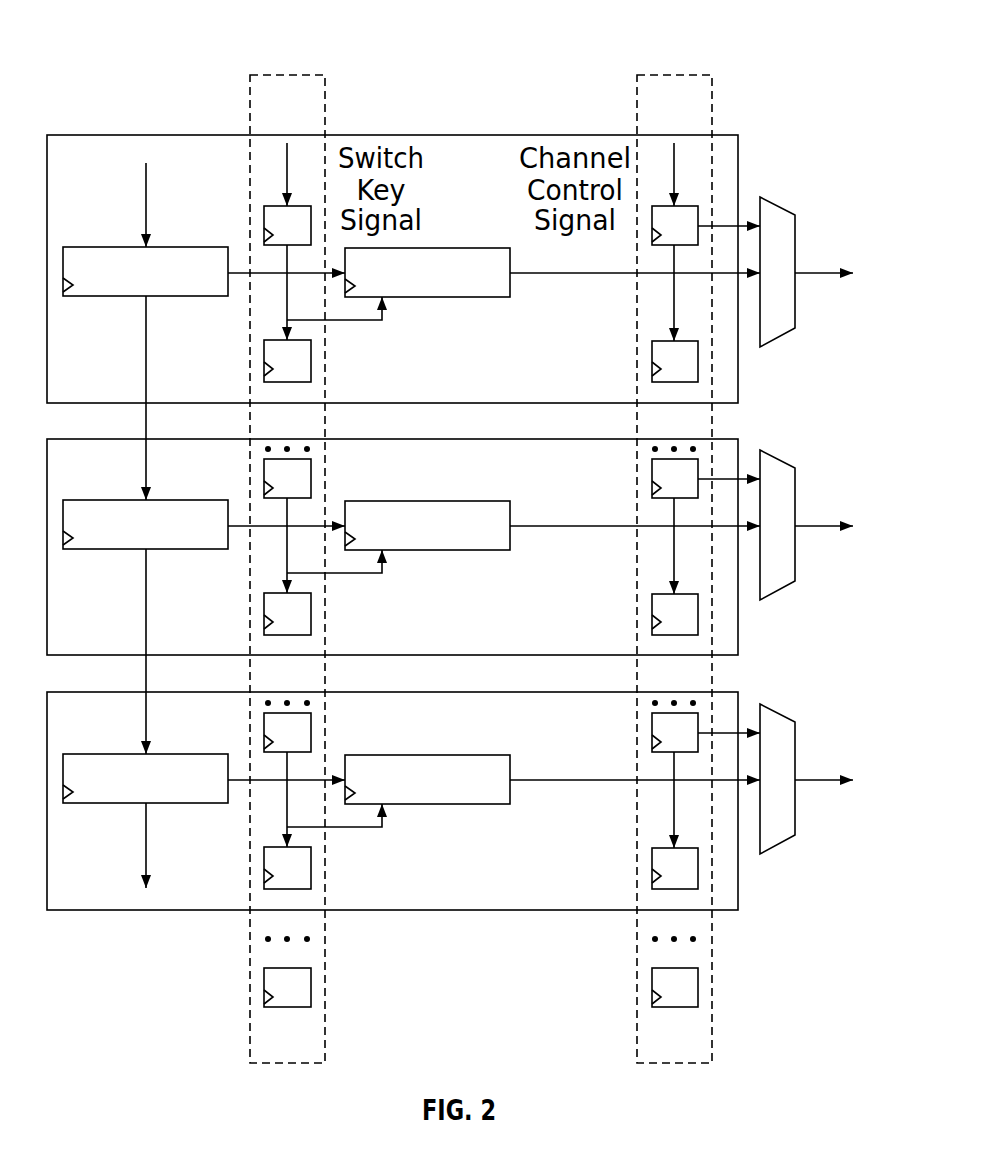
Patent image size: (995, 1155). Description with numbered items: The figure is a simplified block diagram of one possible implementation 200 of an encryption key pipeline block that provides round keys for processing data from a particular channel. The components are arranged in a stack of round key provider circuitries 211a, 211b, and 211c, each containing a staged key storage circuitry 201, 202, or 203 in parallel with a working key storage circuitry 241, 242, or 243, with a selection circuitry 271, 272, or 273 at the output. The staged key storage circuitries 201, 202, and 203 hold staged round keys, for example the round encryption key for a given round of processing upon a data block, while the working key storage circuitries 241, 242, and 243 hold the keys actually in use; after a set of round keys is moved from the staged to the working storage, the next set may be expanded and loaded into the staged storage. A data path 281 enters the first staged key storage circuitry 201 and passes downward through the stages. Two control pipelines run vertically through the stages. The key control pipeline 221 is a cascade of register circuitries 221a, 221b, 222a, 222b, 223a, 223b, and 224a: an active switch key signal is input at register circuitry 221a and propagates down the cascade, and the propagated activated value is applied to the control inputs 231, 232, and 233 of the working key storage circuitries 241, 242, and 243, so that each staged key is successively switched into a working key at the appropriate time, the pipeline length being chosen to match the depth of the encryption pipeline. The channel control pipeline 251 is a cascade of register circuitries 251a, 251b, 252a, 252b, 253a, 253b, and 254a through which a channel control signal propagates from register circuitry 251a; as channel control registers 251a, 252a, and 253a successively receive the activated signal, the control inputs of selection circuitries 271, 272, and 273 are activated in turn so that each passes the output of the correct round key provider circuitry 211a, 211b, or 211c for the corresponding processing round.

The implementation of an encryption key pipeline block 200 is at (196, 46).
The staged key storage circuitry 201 is at (128, 247).
The staged key storage circuitry 202 is at (128, 500).
The staged key storage circuitry 203 is at (128, 754).
The round key provider circuitry 211a is at (108, 161).
The round key provider circuitry 211b is at (108, 465).
The round key provider circuitry 211c is at (108, 721).
The key control pipeline 221 is at (307, 108).
The key control register circuitry 221a is at (264, 221).
The key control register circuitry 221b is at (264, 355).
The key control register circuitry 222a is at (264, 474).
The key control register circuitry 222b is at (264, 608).
The key control register circuitry 223a is at (264, 728).
The key control register circuitry 223b is at (264, 862).
The key control register circuitry 224a is at (264, 982).
The control input 231 is at (430, 331).
The control input 232 is at (430, 584).
The control input 233 is at (430, 838).
The working key storage circuitry 241 is at (446, 248).
The working key storage circuitry 242 is at (446, 501).
The working key storage circuitry 243 is at (446, 755).
The channel control pipeline 251 is at (695, 108).
The channel control register circuitry 251a is at (652, 230).
The channel control register circuitry 251b is at (652, 362).
The channel control register circuitry 252a is at (652, 483).
The channel control register circuitry 252b is at (652, 615).
The channel control register circuitry 253a is at (652, 737).
The channel control register circuitry 253b is at (652, 869).
The channel control register circuitry 254a is at (652, 982).
The selection circuitry 271 is at (797, 240).
The selection circuitry 272 is at (797, 493).
The selection circuitry 273 is at (797, 747).
The input data line 281 is at (146, 203).